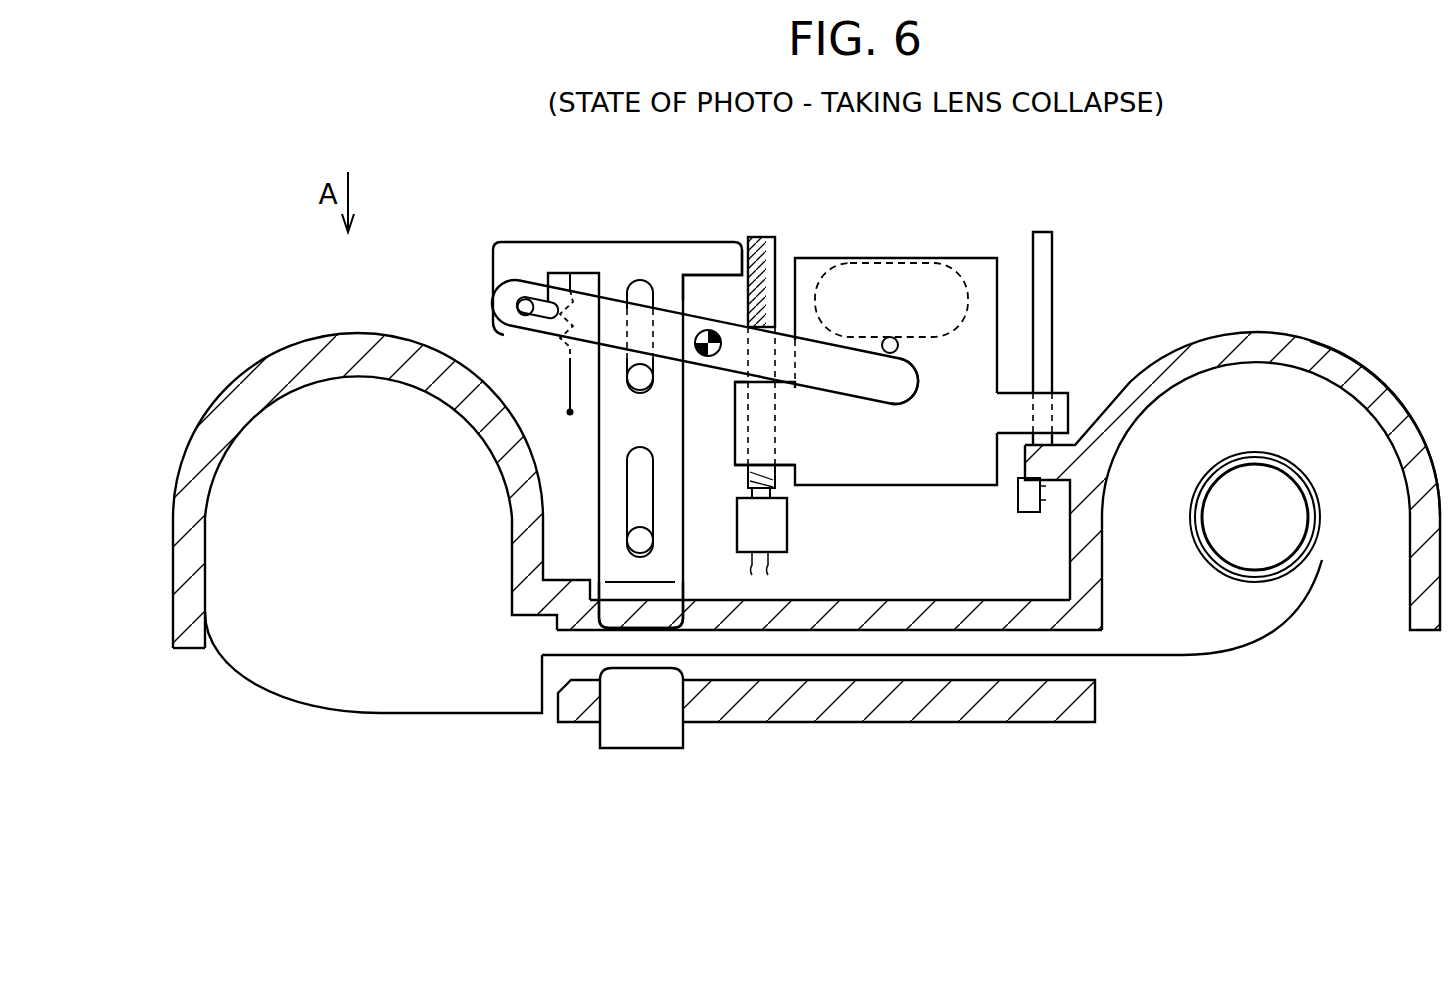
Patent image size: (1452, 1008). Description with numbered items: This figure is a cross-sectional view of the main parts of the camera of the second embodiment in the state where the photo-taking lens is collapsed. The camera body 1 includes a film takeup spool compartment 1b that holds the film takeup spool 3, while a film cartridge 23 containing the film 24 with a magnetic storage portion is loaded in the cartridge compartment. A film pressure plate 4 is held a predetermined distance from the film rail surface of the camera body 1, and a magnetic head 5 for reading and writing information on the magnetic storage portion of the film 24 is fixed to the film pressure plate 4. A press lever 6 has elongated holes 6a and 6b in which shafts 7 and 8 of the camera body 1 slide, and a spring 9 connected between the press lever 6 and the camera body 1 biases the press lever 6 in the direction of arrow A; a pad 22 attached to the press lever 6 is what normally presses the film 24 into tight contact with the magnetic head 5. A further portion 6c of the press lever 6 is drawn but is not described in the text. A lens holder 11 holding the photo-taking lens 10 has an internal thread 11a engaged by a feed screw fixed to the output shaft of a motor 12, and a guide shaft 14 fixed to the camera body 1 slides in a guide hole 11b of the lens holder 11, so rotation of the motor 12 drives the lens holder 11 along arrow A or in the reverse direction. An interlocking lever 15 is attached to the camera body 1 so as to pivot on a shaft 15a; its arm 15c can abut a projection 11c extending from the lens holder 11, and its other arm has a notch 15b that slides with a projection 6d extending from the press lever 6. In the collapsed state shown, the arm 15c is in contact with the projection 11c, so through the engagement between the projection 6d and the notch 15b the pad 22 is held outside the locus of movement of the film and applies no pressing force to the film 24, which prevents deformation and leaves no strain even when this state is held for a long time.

The camera body 1 is at (1255, 345).
The film takeup spool compartment 1b is at (1368, 380).
The film takeup spool 3 is at (1274, 487).
The film pressure plate 4 is at (864, 706).
The magnetic head 5 is at (643, 733).
The press lever 6 is at (655, 250).
The elongated hole 6a is at (637, 276).
The elongated hole 6b is at (627, 503).
The arm portion of slide plate 6c is at (722, 252).
The projection 6d is at (515, 304).
The shaft 7 is at (637, 384).
The shaft 8 is at (652, 537).
The spring 9 is at (565, 356).
The photo-taking lens 10 is at (912, 258).
The lens holder 11 is at (805, 270).
The internal thread 11a is at (740, 435).
The guide hole 11b is at (1060, 393).
The projection 11c is at (898, 347).
The motor 12 is at (789, 523).
The guide shaft 14 is at (1053, 262).
The interlocking lever 15 is at (692, 380).
The shaft 15a is at (707, 331).
The notch 15b is at (540, 298).
The arm 15c is at (914, 397).
The pad 22 is at (668, 603).
The film cartridge 23 is at (386, 690).
The film 24 is at (1243, 640).